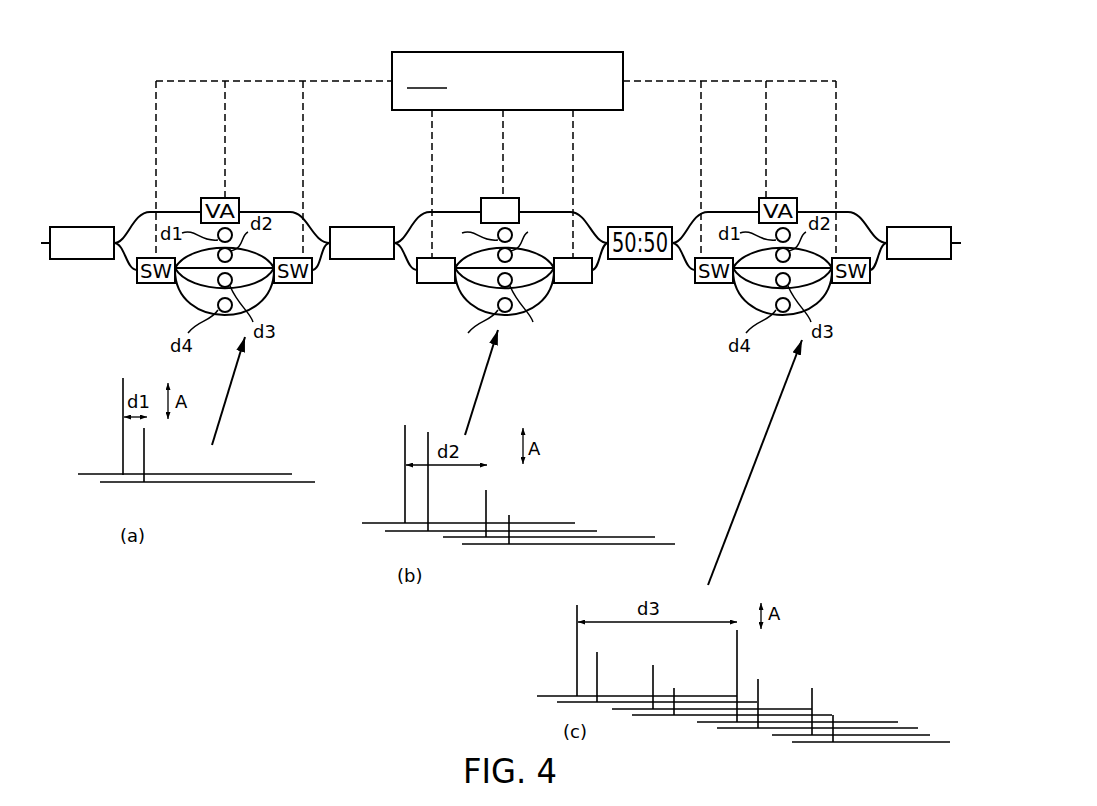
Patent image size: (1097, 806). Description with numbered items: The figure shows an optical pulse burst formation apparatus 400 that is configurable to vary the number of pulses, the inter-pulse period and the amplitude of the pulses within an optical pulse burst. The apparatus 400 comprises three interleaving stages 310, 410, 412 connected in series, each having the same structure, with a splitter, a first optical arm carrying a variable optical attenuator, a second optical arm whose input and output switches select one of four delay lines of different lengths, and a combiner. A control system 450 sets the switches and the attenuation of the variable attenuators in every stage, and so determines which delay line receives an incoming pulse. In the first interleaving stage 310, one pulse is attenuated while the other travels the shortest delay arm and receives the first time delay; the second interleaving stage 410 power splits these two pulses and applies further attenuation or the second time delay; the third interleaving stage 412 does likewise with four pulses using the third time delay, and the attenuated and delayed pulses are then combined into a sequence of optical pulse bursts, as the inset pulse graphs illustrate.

The optical pulse burst formation apparatus 400 is at (813, 63).
The control system 450 is at (507, 81).
The first interleaving stage 310 is at (73, 175).
The second interleaving stage 410 is at (393, 181).
The third interleaving stage 412 is at (871, 195).